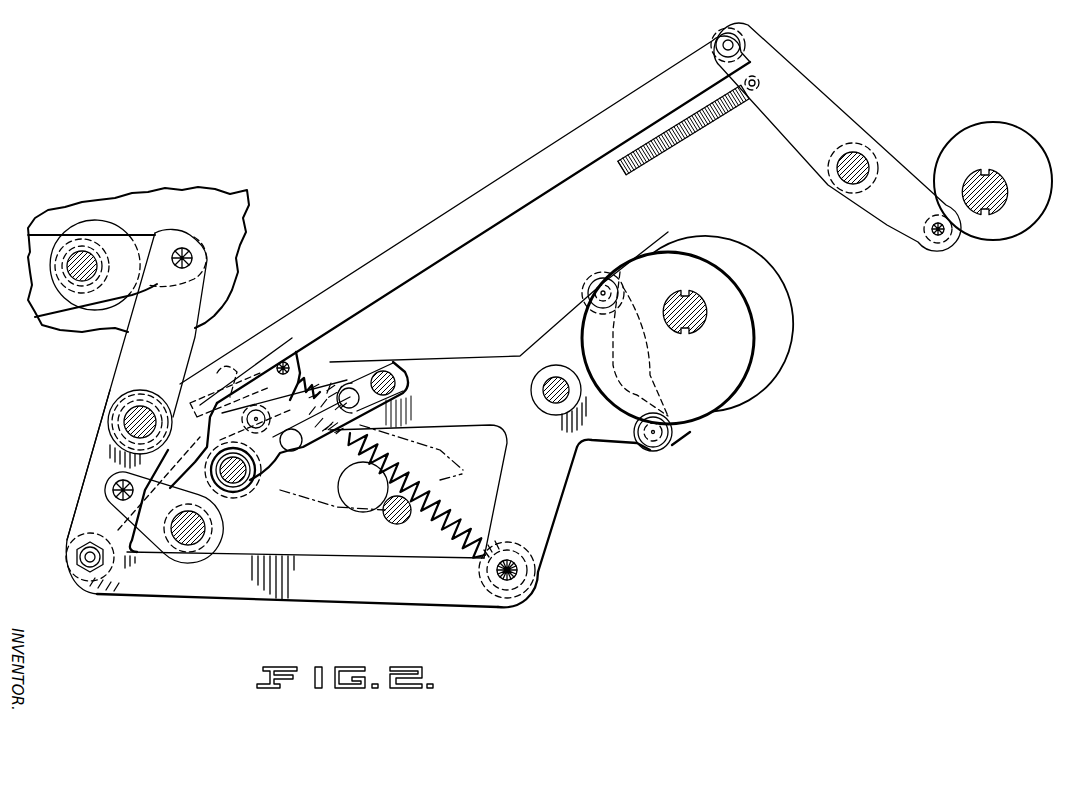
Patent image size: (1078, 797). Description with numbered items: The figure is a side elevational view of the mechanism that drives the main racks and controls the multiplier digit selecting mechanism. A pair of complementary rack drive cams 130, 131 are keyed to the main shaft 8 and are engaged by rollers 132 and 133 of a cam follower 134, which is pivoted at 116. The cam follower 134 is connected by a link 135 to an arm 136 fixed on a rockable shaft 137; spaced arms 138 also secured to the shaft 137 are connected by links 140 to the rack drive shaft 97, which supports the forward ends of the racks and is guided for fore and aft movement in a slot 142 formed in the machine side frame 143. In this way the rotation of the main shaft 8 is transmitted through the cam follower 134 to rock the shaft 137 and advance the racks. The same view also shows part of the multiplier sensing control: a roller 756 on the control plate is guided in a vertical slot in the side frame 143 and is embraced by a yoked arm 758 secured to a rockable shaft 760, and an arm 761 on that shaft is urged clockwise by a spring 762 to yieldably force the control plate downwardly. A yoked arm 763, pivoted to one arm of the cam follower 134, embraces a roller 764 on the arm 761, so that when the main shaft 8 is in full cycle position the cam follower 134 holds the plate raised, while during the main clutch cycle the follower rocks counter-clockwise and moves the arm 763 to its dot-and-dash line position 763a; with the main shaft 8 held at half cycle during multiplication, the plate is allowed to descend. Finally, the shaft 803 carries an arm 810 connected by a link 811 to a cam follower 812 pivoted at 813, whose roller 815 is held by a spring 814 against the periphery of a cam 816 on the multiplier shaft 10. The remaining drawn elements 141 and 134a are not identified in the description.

The main shaft 8 is at (684, 334).
The multiplier shaft 10 is at (1003, 190).
The rack drive shaft 97 is at (70, 272).
The pivot 116 is at (556, 402).
The rack drive cam 130 is at (649, 262).
The rack drive cam 131 is at (729, 252).
The roller 132 is at (656, 452).
The roller 133 is at (597, 278).
The cam follower 134 is at (558, 506).
The pivot pin 134a is at (513, 582).
The link 135 is at (338, 604).
The arm 136 is at (84, 498).
The rockable shaft 137 is at (127, 421).
The spaced arms 138 is at (117, 376).
The links 140 is at (150, 238).
The bearing 141 is at (93, 248).
The slot 142 is at (34, 262).
The machine side frames 143 is at (247, 196).
The roller 756 is at (395, 372).
The yoked arm 758 is at (369, 372).
The rockable shaft 760 is at (240, 485).
The arm 761 is at (268, 362).
The spring 762 is at (438, 476).
The yoked arm 763 is at (317, 373).
The dot-and-dash line position 763a is at (318, 495).
The roller 764 is at (222, 368).
The shaft 803 is at (205, 530).
The arm 810 is at (128, 510).
The link 811 is at (433, 263).
The cam follower 812 is at (814, 96).
The pivot 813 is at (870, 153).
The spring 814 is at (685, 150).
The roller 815 is at (920, 243).
The cam 816 is at (963, 125).